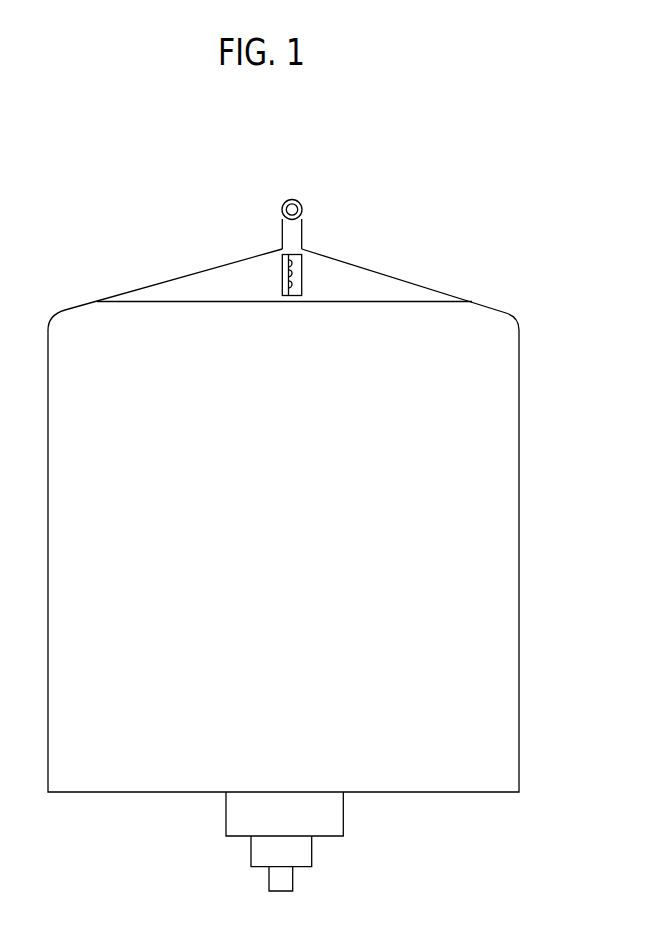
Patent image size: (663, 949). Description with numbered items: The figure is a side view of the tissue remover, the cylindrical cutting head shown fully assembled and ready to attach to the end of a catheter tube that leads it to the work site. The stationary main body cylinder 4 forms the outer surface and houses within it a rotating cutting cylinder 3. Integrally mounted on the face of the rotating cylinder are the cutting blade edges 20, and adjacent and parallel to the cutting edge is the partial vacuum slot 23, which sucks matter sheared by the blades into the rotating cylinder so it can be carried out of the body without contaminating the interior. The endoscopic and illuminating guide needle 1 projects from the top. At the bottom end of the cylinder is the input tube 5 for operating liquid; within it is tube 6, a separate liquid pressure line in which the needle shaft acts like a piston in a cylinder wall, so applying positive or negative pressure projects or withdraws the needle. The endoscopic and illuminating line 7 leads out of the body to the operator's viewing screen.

The endoscopic and illuminating guide needle 1 is at (305, 226).
The rotating cutting cylinder 3 is at (436, 281).
The stationary main body cylinder 4 is at (525, 510).
The input tube 5 is at (348, 814).
The tube 6 is at (316, 854).
The endoscopic and illuminating line 7 is at (296, 888).
The cutting blade edges 20 is at (307, 278).
The partial vacuum slot 23 is at (275, 272).